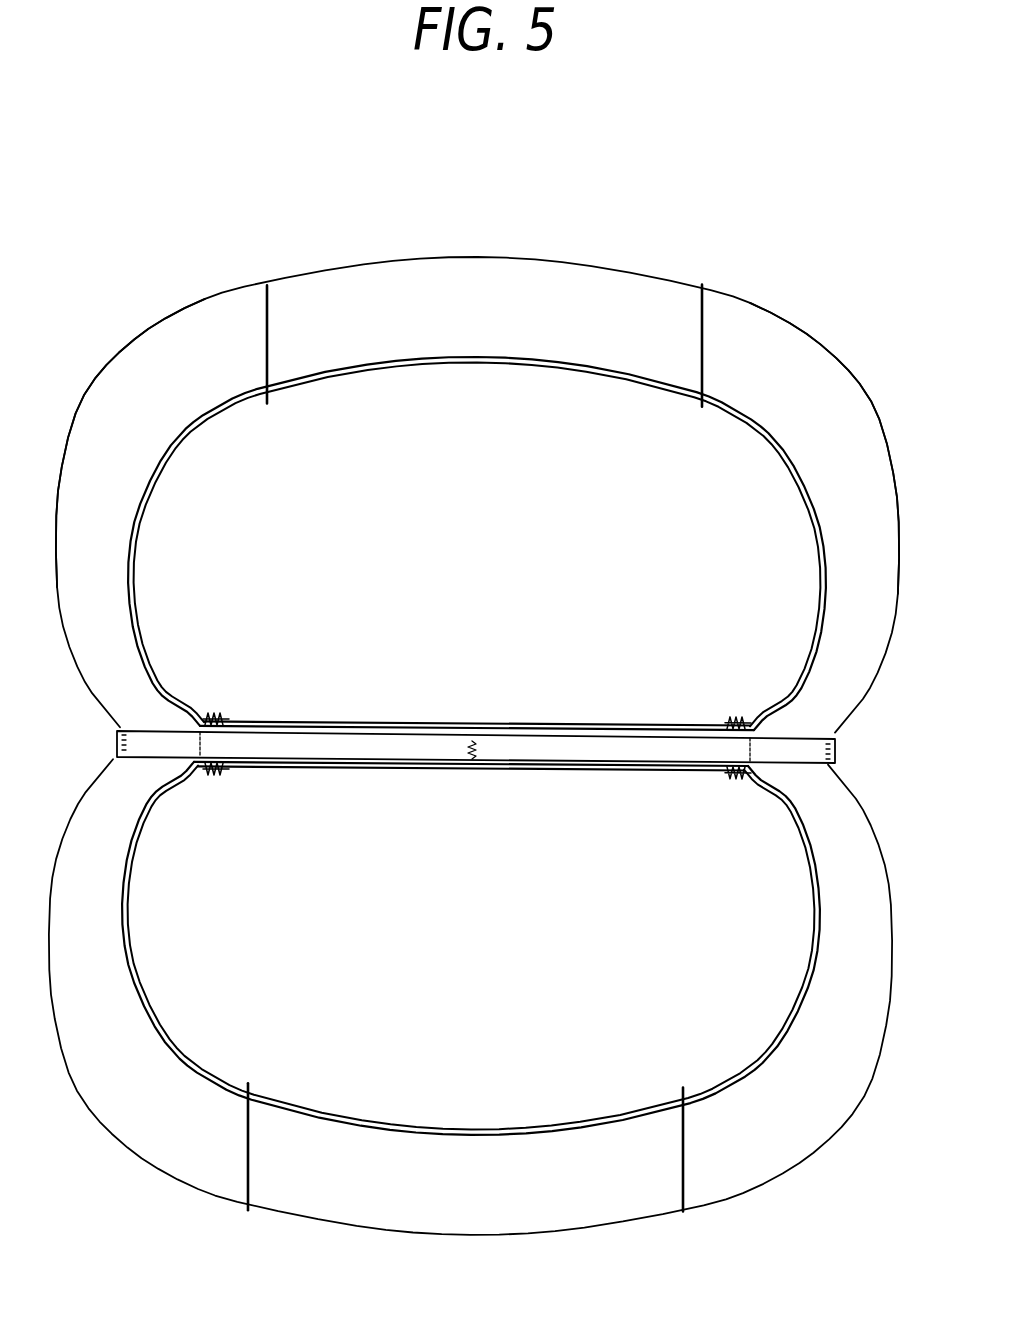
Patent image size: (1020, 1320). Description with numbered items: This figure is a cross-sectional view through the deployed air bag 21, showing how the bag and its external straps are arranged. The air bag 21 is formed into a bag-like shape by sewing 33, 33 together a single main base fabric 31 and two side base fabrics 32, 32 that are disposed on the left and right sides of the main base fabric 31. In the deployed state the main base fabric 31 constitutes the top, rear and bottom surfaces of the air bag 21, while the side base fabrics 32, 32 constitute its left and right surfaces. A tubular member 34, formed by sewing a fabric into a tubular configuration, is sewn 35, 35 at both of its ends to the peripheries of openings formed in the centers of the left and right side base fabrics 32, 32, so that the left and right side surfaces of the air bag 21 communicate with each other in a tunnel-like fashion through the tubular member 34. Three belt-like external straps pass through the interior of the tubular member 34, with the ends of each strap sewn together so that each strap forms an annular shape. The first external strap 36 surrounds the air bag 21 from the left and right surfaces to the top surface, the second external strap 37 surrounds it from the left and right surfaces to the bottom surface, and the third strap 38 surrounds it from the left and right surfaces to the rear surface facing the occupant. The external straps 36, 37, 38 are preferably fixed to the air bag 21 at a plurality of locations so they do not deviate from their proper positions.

The air bag 21 is at (697, 225).
The main base fabric 31 is at (498, 278).
The side base fabric 32 is at (150, 368).
The sewing 33 is at (260, 323).
The tubular member 34 is at (405, 716).
The sewing 35 is at (215, 780).
The first external strap 36 is at (440, 357).
The second external strap 37 is at (453, 1138).
The third external strap 38 is at (553, 752).